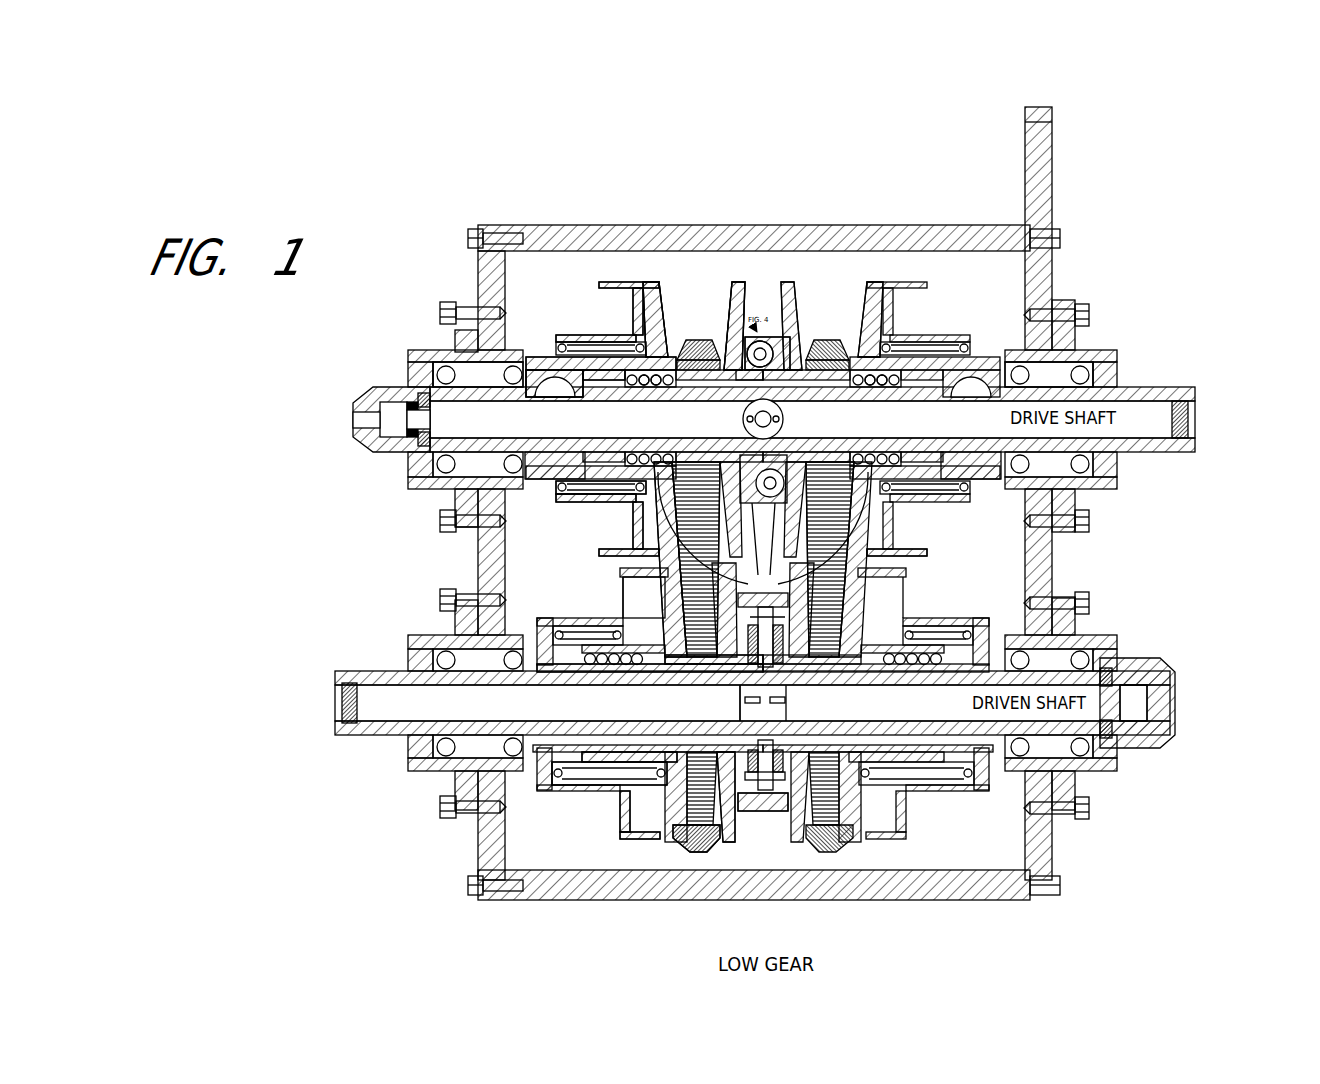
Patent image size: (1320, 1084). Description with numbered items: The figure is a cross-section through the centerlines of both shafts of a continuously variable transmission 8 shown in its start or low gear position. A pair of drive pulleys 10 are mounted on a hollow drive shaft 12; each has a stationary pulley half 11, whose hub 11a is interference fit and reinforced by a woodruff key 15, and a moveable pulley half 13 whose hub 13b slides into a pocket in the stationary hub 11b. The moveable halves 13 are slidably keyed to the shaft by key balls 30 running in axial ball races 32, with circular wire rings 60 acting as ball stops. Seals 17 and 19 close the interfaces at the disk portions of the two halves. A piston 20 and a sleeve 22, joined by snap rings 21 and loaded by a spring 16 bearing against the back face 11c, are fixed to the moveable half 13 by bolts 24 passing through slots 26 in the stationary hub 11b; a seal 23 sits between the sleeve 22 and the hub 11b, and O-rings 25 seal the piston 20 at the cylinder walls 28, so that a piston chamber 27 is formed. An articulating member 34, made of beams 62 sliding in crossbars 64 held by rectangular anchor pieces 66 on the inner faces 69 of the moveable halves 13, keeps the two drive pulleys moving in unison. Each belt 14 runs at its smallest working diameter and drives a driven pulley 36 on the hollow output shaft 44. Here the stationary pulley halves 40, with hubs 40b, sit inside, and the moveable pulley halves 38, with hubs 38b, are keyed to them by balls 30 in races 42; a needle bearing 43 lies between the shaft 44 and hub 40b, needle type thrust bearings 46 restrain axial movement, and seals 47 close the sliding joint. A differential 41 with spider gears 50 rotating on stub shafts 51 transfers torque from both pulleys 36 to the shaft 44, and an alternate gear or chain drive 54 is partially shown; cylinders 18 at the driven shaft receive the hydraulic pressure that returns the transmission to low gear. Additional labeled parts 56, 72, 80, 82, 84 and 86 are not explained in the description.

The continuously variable transmission 8 is at (396, 557).
The drive pulley 10 is at (728, 265).
The stationary pulley half 11 is at (655, 285).
The hub of stationary pulley half 11a is at (665, 320).
The stationary pulley hub 11b is at (548, 370).
The back face of stationary pulley half 11c is at (735, 285).
The drive shaft 12 is at (1150, 387).
The moveable pulley half 13 is at (768, 300).
The moveable pulley hub 13b is at (558, 386).
The belt 14 is at (700, 344).
The woodruff key 15 is at (1107, 353).
The spring 16 is at (560, 357).
The seal 17 is at (755, 505).
The cylinder 18 is at (545, 500).
The seal 19 is at (733, 572).
The piston 20 is at (612, 336).
The snap ring 21 is at (565, 360).
The sleeve 22 is at (930, 556).
The seal 23 is at (1038, 300).
The bolt 24 is at (632, 505).
The O-ring 25 is at (605, 565).
The slot 26 is at (600, 495).
The piston chamber 27 is at (552, 826).
The cylinder wall 28 is at (612, 292).
The key ball 30 is at (634, 388).
The axial ball race 32 is at (602, 388).
The articulating member 34 is at (800, 300).
The driven pulley 36 is at (657, 852).
The moveable pulley half of driven pulley 38 is at (625, 828).
The hub of moveable driven pulley half 38b is at (560, 670).
The stationary pulley half of driven pulley 40 is at (700, 830).
The hub of stationary driven pulley half 40b is at (602, 786).
The differential 41 is at (700, 690).
The axial ball race 42 is at (640, 630).
The needle bearing 43 is at (680, 672).
The output shaft 44 is at (1060, 671).
The needle type thrust bearing 46 is at (845, 742).
The seal 47 is at (735, 688).
The spider gear 50 is at (775, 690).
The stub shaft 51 is at (745, 830).
The alternate gear or chain drive 54 is at (760, 815).
The lock nut 56 is at (402, 417).
The circular wire ring 60 is at (620, 388).
The beam 62 is at (783, 419).
The crossbar 64 is at (795, 318).
The rectangular anchor piece 66 is at (790, 350).
The inner face of moveable pulley half 69 is at (768, 335).
The housing bottom plate 72 is at (548, 900).
The housing flange 80 is at (455, 338).
The bolt 82 is at (1095, 452).
The ball bearing 84 is at (1095, 362).
The housing top plate 86 is at (482, 230).